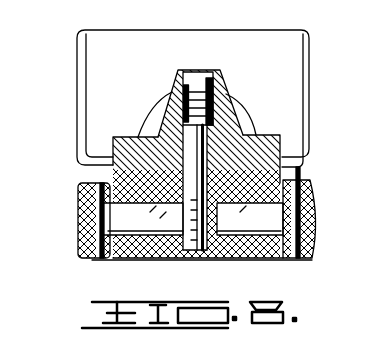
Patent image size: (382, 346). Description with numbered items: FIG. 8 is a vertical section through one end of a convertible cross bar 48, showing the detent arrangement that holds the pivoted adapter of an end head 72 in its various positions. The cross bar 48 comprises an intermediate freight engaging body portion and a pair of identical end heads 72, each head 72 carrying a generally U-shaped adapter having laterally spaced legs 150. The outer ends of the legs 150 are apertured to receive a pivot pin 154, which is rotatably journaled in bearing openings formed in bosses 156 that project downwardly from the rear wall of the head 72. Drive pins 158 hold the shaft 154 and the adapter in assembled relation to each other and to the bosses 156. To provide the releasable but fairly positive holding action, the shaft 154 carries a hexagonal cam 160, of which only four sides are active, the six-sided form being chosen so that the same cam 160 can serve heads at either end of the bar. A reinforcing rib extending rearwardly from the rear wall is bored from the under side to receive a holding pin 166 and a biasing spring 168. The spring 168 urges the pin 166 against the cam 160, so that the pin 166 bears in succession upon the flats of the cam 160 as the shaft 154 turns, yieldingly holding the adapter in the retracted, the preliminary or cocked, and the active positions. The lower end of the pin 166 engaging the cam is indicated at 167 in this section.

The cross bar 48 is at (308, 52).
The end head 72 is at (285, 148).
The legs 150 is at (83, 192).
The pivot pin 154 is at (148, 222).
The bosses 156 is at (125, 258).
The drive pins 158 is at (100, 224).
The hexagonal cam 160 is at (222, 152).
The holding pin 166 is at (211, 128).
The bolt end 167 is at (197, 250).
The biasing spring 168 is at (215, 93).